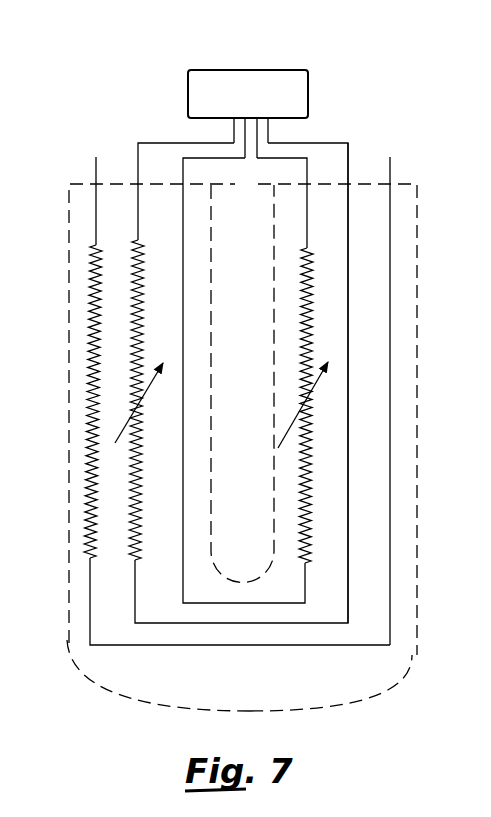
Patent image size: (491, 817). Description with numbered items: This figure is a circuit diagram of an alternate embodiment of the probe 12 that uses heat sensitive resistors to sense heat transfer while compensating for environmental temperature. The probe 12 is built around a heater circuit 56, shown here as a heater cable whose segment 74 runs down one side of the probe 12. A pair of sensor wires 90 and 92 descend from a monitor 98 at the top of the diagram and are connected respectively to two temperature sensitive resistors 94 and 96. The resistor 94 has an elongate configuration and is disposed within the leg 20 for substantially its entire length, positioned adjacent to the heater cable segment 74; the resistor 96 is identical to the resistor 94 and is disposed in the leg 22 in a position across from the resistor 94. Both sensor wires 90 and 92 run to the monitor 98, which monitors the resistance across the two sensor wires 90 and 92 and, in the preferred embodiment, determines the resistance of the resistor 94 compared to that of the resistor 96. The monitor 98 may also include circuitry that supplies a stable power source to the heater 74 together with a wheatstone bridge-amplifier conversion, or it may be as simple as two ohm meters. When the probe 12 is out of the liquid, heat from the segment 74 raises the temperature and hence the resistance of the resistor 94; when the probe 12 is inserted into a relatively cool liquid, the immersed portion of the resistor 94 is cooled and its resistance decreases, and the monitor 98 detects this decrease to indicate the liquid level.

The probe 12 is at (368, 147).
The leg 20 is at (69, 243).
The leg 22 is at (417, 273).
The heater circuit 56 is at (96, 167).
The heater cable segment 74 is at (90, 309).
The sensor wire 90 is at (197, 143).
The sensor wire 92 is at (275, 158).
The temperature sensitive resistor 94 is at (145, 348).
The temperature sensitive resistor 96 is at (312, 355).
The monitor 98 is at (265, 70).